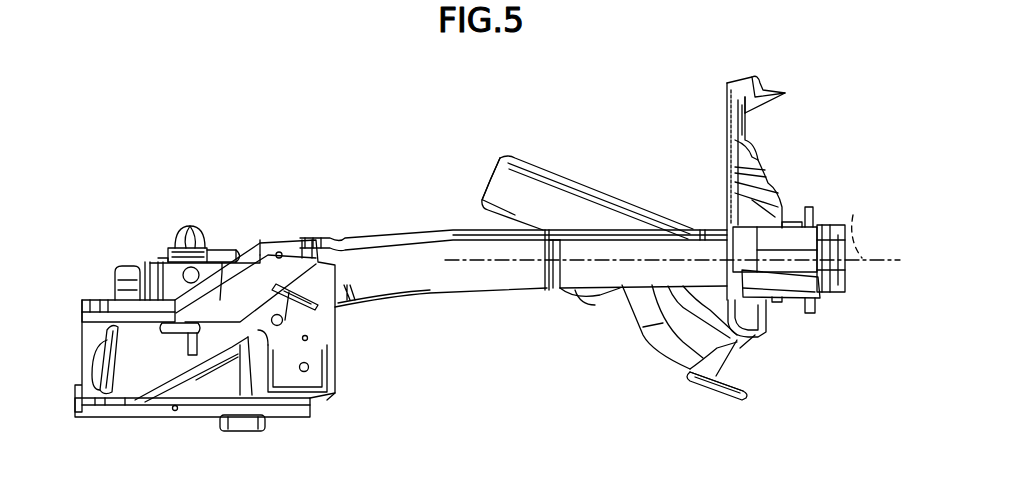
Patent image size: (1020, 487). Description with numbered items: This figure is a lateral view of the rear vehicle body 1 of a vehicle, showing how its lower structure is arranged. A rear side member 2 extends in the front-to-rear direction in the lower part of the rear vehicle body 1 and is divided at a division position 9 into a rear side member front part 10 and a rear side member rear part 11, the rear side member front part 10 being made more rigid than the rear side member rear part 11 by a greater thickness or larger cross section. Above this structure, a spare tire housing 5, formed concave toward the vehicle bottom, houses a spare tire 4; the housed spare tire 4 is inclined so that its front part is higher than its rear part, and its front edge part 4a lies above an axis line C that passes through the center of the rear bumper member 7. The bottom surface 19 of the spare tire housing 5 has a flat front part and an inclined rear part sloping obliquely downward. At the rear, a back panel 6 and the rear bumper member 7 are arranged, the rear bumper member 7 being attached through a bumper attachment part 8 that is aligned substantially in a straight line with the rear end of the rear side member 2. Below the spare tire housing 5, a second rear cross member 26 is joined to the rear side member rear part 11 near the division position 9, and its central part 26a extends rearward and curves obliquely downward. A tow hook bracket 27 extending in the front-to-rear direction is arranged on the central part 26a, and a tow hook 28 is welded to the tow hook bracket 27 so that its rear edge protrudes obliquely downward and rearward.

The rear vehicle body 1 is at (185, 175).
The rear side member 2 is at (474, 301).
The spare tire 4 is at (557, 180).
The front edge part of the spare tire 4a is at (485, 187).
The spare tire housing 5 is at (571, 300).
The back panel 6 is at (740, 168).
The rear bumper member 7 is at (835, 225).
The bumper attachment part 8 is at (798, 266).
The division position 9 is at (540, 275).
The rear side member front part 10 is at (415, 287).
The rear side member rear part 11 is at (667, 247).
The bottom surface of the spare tire housing 19 is at (614, 293).
The second rear cross member 26 is at (652, 318).
The central part in the vehicle width direction of the second rear cross member 26a is at (738, 342).
The tow hook bracket 27 is at (736, 346).
The tow hook 28 is at (722, 395).
The axis line C is at (862, 223).